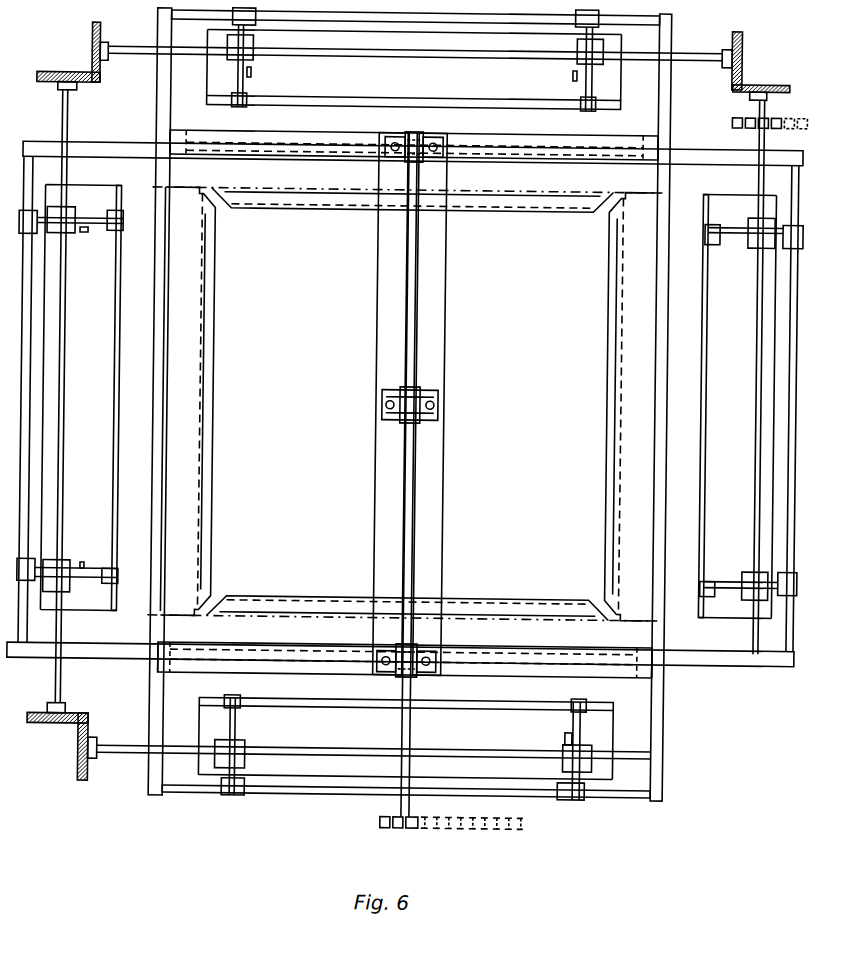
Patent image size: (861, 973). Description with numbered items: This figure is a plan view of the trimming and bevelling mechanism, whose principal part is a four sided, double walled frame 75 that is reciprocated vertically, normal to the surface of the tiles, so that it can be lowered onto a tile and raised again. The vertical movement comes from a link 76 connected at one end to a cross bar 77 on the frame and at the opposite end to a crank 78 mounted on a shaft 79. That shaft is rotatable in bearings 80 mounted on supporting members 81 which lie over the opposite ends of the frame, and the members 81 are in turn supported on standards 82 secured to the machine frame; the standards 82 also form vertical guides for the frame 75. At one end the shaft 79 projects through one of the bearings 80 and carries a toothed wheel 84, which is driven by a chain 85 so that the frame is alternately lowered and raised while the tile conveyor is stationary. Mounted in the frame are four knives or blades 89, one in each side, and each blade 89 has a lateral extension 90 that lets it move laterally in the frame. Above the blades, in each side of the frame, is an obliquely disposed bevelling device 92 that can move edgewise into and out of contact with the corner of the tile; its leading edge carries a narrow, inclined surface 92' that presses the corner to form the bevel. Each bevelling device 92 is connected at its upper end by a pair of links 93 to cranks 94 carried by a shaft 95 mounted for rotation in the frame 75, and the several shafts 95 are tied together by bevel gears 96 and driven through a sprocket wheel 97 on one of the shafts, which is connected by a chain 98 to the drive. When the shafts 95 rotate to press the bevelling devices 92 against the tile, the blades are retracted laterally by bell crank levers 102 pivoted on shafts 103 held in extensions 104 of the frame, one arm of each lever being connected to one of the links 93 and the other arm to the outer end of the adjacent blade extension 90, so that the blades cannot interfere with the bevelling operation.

The four sided, double walled frame 75 is at (158, 451).
The link 76 is at (385, 405).
The cross bar 77 is at (384, 493).
The crank 78 is at (420, 423).
The shaft 79 is at (410, 545).
The bearings 80 is at (424, 134).
The supporting members 81 is at (354, 141).
The standards 82 is at (652, 144).
The toothed wheel 84 is at (423, 828).
The chain 85 is at (500, 826).
The knives or blades 89 is at (214, 358).
The lateral extension 90 is at (43, 474).
The bevelling device 92 is at (391, 403).
The narrow, inclined surfaces 92' is at (230, 401).
The links 93 is at (238, 80).
The cranks 94 is at (248, 62).
The shaft 95 is at (451, 57).
The bevel gears 96 is at (87, 34).
The sprocket wheel 97 is at (737, 103).
The chain 98 is at (770, 109).
The bell crank levers 102 is at (244, 80).
The shafts 103 is at (32, 164).
The extensions 104 is at (140, 118).